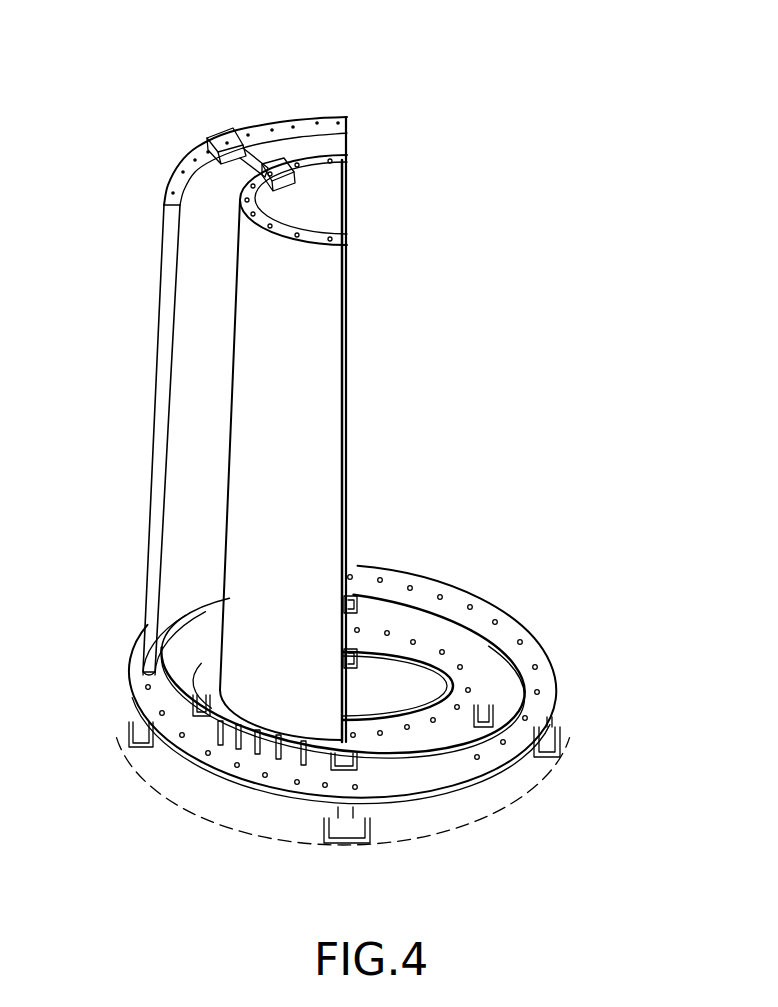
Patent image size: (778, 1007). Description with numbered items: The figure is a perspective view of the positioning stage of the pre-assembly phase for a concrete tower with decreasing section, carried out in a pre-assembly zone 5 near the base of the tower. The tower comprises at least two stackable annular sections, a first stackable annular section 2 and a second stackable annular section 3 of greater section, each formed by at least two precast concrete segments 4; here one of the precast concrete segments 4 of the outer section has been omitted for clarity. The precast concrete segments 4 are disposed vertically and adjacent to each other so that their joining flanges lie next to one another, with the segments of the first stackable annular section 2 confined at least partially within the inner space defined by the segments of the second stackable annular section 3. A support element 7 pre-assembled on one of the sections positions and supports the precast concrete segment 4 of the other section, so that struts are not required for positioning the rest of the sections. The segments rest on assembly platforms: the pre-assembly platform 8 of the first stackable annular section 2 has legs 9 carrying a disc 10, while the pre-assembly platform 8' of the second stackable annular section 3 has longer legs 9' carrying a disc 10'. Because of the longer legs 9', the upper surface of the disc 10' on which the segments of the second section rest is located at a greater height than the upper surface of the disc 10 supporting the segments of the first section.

The first stackable annular section 2 is at (362, 435).
The second stackable annular section 3 is at (133, 379).
The precast concrete segment 4 is at (333, 183).
The pre-assembly zone 5 is at (173, 800).
The support element 7 is at (254, 157).
The pre-assembly platform 8 is at (342, 747).
The pre-assembly platform 8' is at (342, 732).
The legs 9 is at (398, 669).
The legs 9' is at (395, 743).
The disc 10 is at (364, 619).
The disc 10' is at (387, 705).